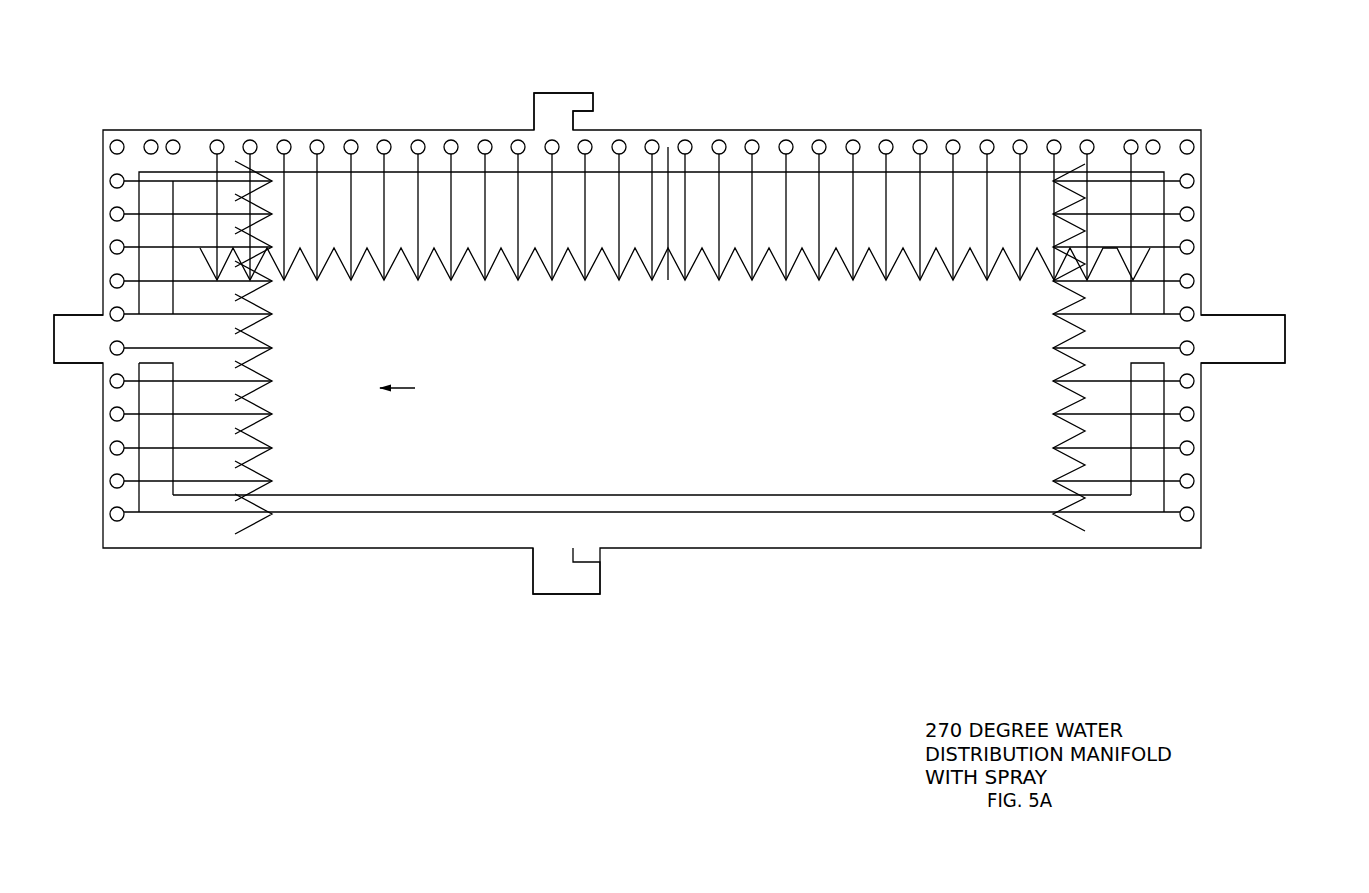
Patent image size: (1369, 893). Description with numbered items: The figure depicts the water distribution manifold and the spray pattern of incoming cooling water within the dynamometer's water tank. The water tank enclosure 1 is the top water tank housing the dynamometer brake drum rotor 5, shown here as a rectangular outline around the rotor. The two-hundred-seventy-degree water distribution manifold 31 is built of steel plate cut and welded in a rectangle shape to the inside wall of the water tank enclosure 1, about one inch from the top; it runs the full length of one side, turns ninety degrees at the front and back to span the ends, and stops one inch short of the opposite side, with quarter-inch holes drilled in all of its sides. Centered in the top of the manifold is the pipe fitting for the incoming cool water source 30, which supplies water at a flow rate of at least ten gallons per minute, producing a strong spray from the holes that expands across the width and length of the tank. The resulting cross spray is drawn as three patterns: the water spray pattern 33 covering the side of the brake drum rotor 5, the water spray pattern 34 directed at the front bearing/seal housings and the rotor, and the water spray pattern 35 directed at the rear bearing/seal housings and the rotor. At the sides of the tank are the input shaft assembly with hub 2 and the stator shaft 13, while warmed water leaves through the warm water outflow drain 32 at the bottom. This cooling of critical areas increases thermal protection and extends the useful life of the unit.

The water tank enclosure 1 is at (147, 126).
The input shaft assembly with hub 2 is at (85, 342).
The dynamometer brake drum rotor 5 is at (533, 315).
The stator shaft with common hydraulic canal and cylinder ports 13 is at (1287, 347).
The incoming cool water source 30 is at (595, 94).
The 270-degree water distribution manifold 31 is at (948, 138).
The warm water outflow drain 32 is at (602, 585).
The water spray pattern for side of brake drum rotor 33 is at (719, 283).
The water spray pattern for front bearing/seal housings and brake drum rotor 34 is at (274, 347).
The water spray pattern for rear bearing/seal housings and brake drum rotor 35 is at (1051, 347).